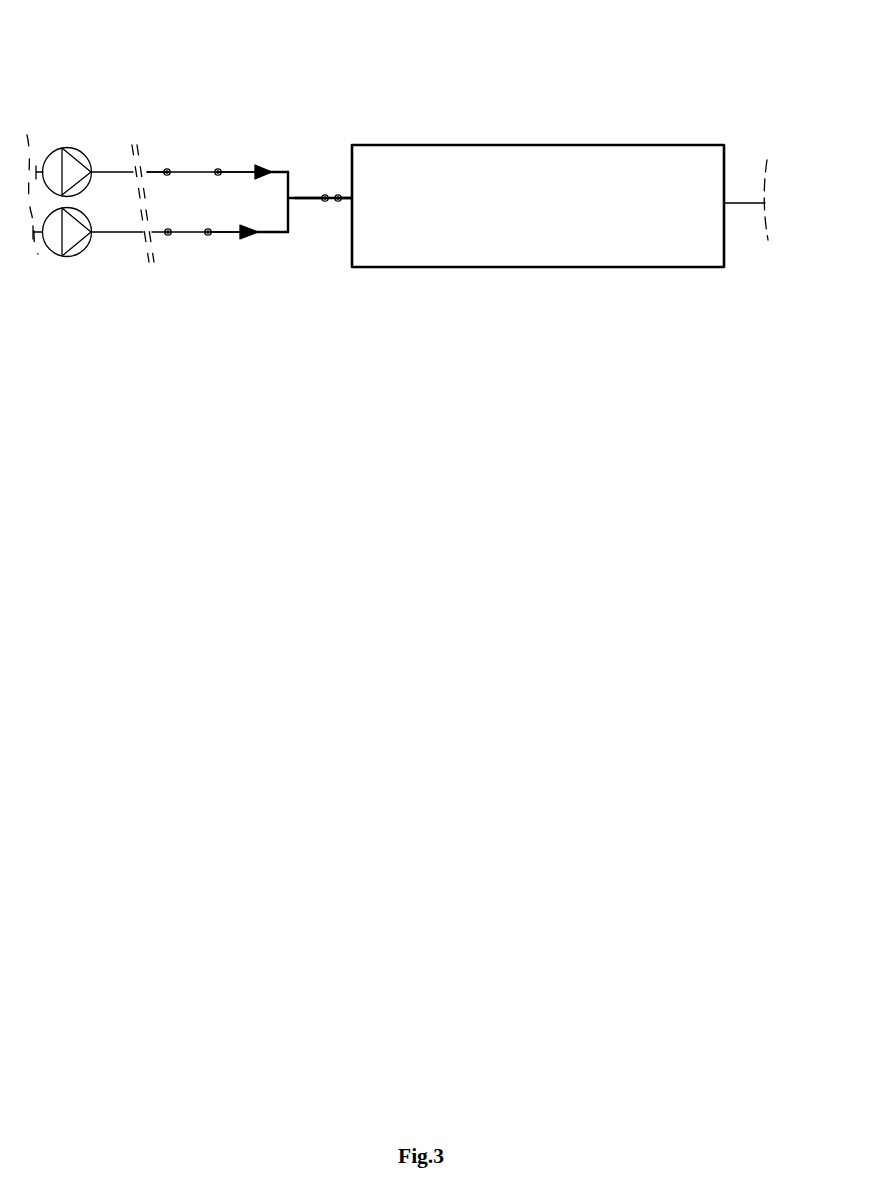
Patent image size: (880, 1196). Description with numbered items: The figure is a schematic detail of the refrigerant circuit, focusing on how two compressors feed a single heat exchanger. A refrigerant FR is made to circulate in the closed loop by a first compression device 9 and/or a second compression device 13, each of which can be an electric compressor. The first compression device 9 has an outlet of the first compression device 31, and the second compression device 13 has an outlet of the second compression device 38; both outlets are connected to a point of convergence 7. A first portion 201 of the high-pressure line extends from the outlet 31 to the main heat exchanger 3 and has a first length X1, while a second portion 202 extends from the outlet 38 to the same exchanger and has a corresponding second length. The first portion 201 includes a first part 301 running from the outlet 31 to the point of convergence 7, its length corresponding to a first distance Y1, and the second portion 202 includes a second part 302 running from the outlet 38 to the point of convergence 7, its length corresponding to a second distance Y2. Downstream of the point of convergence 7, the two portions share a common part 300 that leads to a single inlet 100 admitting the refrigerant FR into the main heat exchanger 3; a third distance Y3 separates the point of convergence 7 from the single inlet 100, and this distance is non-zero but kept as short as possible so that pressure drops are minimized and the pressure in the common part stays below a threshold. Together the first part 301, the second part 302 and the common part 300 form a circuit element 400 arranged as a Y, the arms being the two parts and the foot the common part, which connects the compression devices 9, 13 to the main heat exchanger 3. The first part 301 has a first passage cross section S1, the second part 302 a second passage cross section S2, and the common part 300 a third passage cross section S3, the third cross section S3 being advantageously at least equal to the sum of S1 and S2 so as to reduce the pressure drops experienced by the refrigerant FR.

The main heat exchanger 3 is at (560, 206).
The second compression device 13 is at (63, 148).
The first compression device 9 is at (62, 256).
The outlet of the second compression device 38 is at (92, 172).
The outlet of the first compression device 31 is at (98, 237).
The second passage cross section S2 is at (167, 168).
The first passage cross section S1 is at (168, 236).
The third passage cross section S3 is at (322, 197).
The second distance Y2 is at (218, 168).
The first distance Y1 is at (208, 236).
The third distance Y3 is at (338, 201).
The first length X1 is at (336, 197).
The refrigerant FR is at (263, 165).
The second portion 202 is at (248, 141).
The first portion 201 is at (282, 250).
The second part 302 is at (190, 152).
The first part 301 is at (292, 199).
The common part 300 is at (352, 267).
The point of convergence 7 is at (327, 210).
The single inlet 100 is at (354, 198).
The circuit element 400 is at (162, 282).